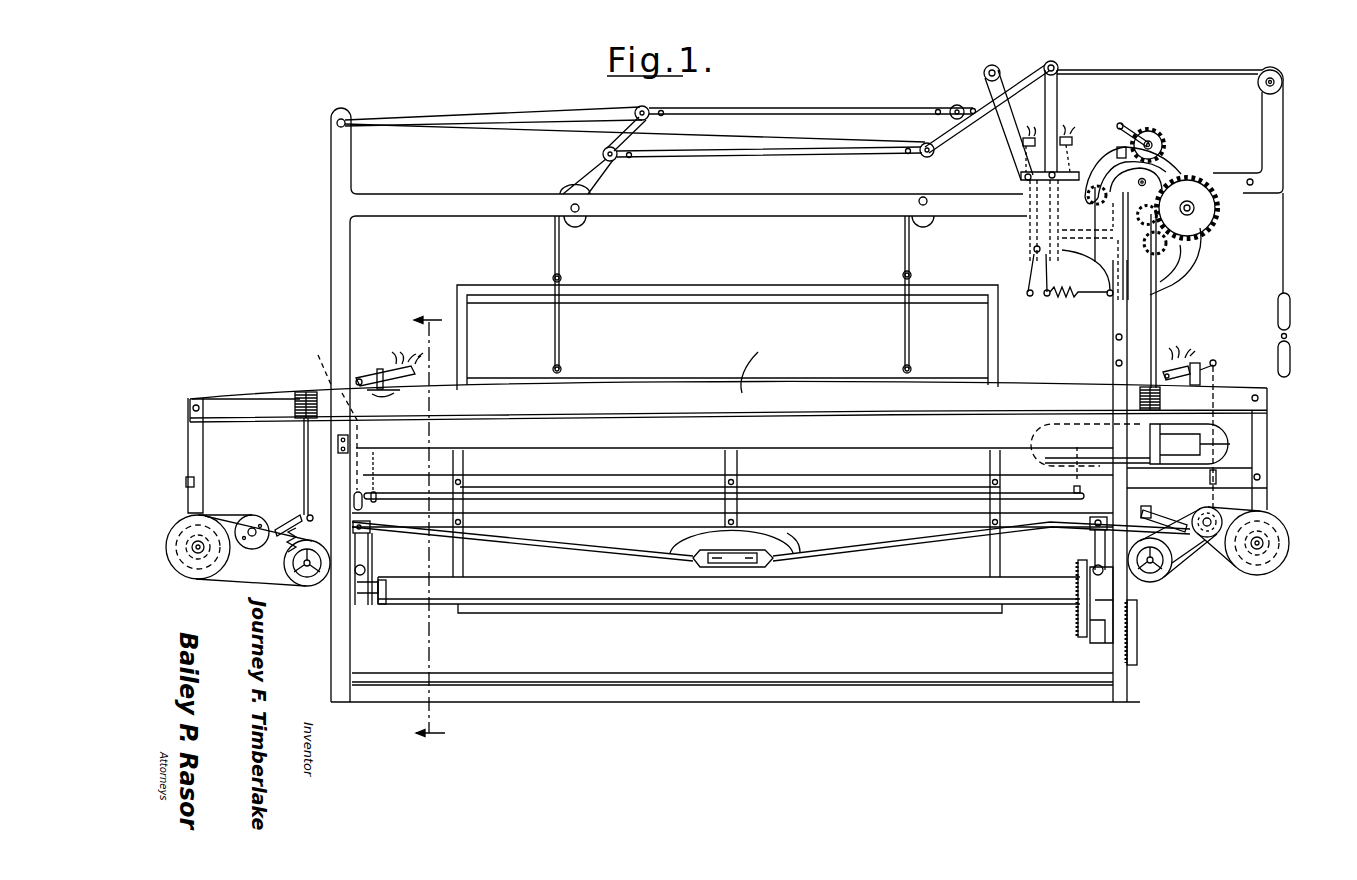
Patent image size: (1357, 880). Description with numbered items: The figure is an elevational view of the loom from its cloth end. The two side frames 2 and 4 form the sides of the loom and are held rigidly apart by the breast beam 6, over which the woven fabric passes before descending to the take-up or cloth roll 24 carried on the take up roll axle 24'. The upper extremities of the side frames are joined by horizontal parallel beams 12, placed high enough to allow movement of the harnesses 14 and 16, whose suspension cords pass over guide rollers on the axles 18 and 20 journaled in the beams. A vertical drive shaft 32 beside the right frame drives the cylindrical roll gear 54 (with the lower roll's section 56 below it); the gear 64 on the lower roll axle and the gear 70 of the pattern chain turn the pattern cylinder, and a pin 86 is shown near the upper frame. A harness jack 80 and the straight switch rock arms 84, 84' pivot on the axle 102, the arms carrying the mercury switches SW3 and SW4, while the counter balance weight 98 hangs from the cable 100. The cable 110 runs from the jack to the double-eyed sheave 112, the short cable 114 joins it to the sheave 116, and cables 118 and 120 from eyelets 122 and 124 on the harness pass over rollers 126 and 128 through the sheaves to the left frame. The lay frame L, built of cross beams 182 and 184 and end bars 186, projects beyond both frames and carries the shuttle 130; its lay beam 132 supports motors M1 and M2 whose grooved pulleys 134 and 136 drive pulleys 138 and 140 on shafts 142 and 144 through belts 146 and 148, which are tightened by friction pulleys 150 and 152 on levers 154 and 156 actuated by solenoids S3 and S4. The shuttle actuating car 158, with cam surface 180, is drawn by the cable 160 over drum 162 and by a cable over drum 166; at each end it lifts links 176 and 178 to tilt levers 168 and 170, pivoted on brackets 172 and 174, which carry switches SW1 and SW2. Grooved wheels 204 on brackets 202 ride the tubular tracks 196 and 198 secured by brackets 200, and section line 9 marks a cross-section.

The side frame 2 is at (343, 640).
The side frame 4 is at (1118, 671).
The breast beam 6 is at (390, 433).
The section line 9 is at (429, 531).
The horizontal parallel beams 12 is at (475, 197).
The harness 14 is at (675, 286).
The harness 16 is at (622, 378).
The axle 18 is at (580, 209).
The axle 20 is at (928, 206).
The take-up or cloth roll 24 is at (729, 592).
The take up roll axle 24' is at (369, 602).
The vertical drive shaft 32 is at (1160, 322).
The cylindrical roll gear 54 is at (1162, 134).
The portion or section of cylindrical gear roll 56 is at (1127, 295).
The gear 64 is at (1166, 268).
The gear 70 is at (1197, 234).
The harness jack 80 is at (1046, 92).
The switch rock arm 84 is at (1070, 275).
The switch rock arm 84' is at (1042, 308).
The pin 86 is at (1251, 187).
The counter balance weight 98 is at (1292, 312).
The cable 100 is at (1287, 250).
The axle 102 is at (1034, 250).
The cable 110 is at (985, 85).
The double-eyed sheave 112 is at (915, 158).
The short cable 114 is at (780, 156).
The sheave 116 is at (630, 157).
The cable 118 is at (762, 136).
The cable 120 is at (590, 180).
The eyelet 122 is at (903, 275).
The eyelet 124 is at (563, 278).
The roller 126 is at (926, 222).
The roller 128 is at (580, 226).
The shuttle 130 is at (1228, 447).
The lay beam 132 is at (1224, 516).
The grooved pulley 134 is at (296, 584).
The grooved pulley 136 is at (1162, 578).
The pulley 138 is at (175, 556).
The pulley 140 is at (1263, 578).
The shaft 142 is at (195, 580).
The shaft 144 is at (1264, 548).
The belt 146 is at (222, 580).
The belt 148 is at (1218, 583).
The friction pulley 150 is at (250, 520).
The friction pulley 152 is at (1207, 543).
The lever 154 is at (288, 522).
The lever 156 is at (1160, 512).
The shuttle actuating car 158 is at (1216, 512).
The cable 160 is at (240, 525).
The drum or reel 162 is at (170, 548).
The drum or reel 166 is at (1266, 543).
The lever 168 is at (370, 376).
The lever 170 is at (1200, 365).
The upright bracket 172 is at (392, 378).
The upright bracket 174 is at (1222, 378).
The link 176 is at (319, 362).
The link 178 is at (1216, 365).
The cam surface 180 is at (1235, 502).
The cross beam 182 is at (224, 400).
The lower cross beam 184 is at (228, 522).
The end bar 186 is at (192, 430).
The tubular track 196 is at (366, 570).
The tubular track 198 is at (1097, 573).
The bracket 200 is at (372, 530).
The bracket 202 is at (1093, 532).
The wheel 204 is at (370, 553).
The lay frame L is at (753, 360).
The motor M1 is at (306, 588).
The motor M2 is at (1151, 584).
The solenoid S3 is at (1138, 394).
The solenoid S4 is at (306, 390).
The mercury switch SW1 is at (400, 354).
The mercury switch SW2 is at (1188, 352).
The mercury switch SW3 is at (1040, 130).
The mercury switch SW4 is at (1072, 135).